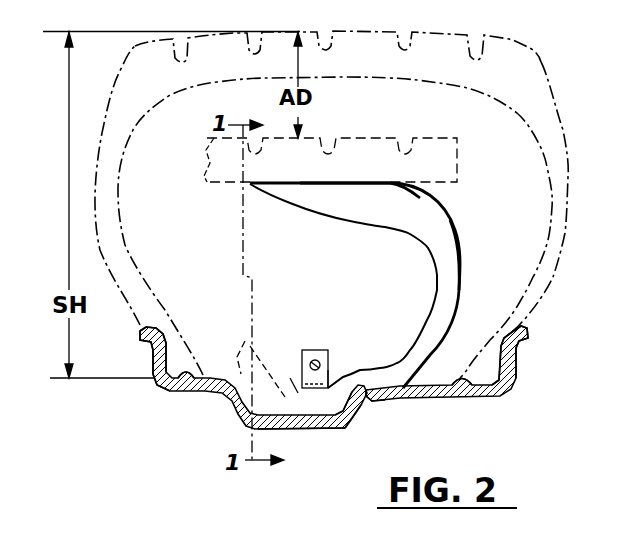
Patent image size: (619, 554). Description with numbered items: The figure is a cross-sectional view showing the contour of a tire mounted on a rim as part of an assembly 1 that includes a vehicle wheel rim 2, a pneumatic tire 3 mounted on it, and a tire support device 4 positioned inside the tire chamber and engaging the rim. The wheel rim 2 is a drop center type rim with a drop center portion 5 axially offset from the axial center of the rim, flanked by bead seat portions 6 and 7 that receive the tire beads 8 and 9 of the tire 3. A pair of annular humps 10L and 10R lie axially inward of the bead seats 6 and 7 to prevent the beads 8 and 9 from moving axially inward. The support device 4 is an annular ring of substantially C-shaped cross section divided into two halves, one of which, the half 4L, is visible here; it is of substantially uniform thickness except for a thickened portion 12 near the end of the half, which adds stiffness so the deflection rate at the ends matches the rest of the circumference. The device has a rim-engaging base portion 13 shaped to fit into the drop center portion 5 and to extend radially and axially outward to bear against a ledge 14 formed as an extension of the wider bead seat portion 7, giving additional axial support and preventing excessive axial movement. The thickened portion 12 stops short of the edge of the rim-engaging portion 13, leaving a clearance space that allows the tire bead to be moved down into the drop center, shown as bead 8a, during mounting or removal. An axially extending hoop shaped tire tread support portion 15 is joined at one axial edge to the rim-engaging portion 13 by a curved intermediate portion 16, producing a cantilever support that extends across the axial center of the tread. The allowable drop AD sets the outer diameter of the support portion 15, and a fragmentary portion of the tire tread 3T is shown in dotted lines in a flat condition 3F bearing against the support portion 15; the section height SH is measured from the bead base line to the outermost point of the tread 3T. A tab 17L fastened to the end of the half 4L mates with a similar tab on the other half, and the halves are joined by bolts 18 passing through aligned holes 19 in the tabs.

The assembly 1 is at (228, 414).
The vehicle wheel rim 2 is at (423, 398).
The pneumatic tire 3 is at (548, 277).
The tire tread 3T is at (510, 50).
The flat condition of the tire tread 3F is at (427, 138).
The tire support device 4 is at (466, 275).
The half of the support device 4L is at (410, 198).
The drop center portion 5 is at (327, 429).
The bead seat portion 6 is at (173, 391).
The bead seat portion 7 is at (484, 379).
The tire bead 8 is at (177, 358).
The tire bead moved into drop center 8a is at (263, 368).
The tire bead 9 is at (488, 358).
The annular hump 10L is at (222, 378).
The annular hump 10R is at (459, 380).
The thickened portion 12 is at (288, 375).
The rim-engaging base portion 13 is at (352, 421).
The ledge 14 is at (373, 402).
The tire tread support portion 15 is at (350, 182).
The curved intermediate portion 16 is at (460, 235).
The tab 17L is at (328, 350).
The bolt 18 is at (317, 360).
The hole 19 is at (328, 370).